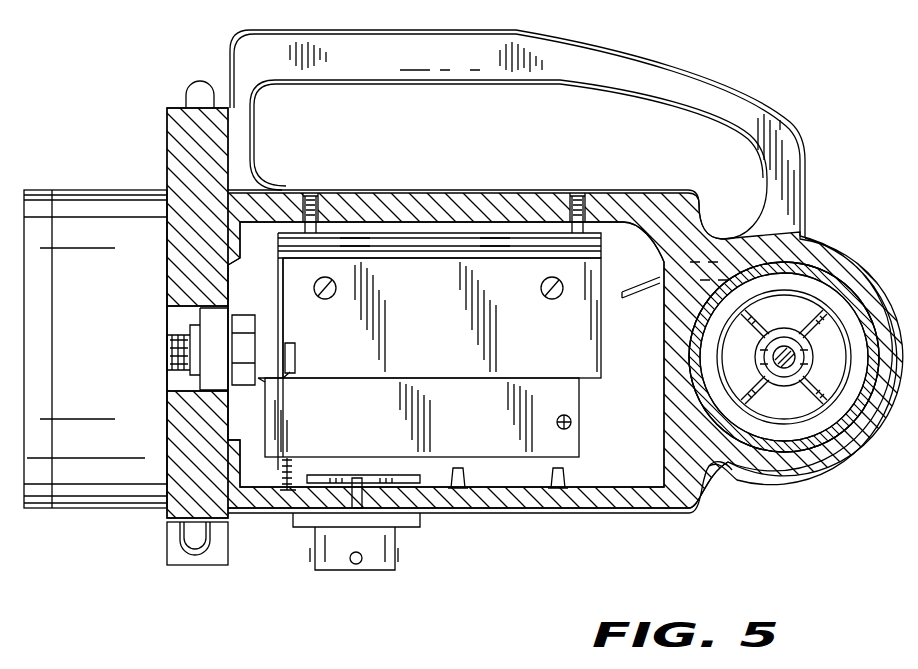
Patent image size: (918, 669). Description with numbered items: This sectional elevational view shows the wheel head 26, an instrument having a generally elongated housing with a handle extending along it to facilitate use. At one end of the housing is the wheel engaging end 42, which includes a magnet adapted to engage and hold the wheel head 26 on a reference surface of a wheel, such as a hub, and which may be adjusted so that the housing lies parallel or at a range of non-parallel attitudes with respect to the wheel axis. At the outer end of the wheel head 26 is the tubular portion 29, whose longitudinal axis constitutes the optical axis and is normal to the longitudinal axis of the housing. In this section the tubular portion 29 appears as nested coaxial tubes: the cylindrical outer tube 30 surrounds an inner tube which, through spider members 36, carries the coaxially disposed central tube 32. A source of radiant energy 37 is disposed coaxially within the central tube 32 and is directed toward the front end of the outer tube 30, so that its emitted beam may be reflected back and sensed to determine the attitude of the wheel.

The wheel head 26 is at (528, 530).
The tubular portion 29 is at (843, 488).
The cylindrical outer tube 30 is at (778, 442).
The central tube 32 is at (813, 352).
The spider members 36 is at (826, 304).
The source of radiant energy 37 is at (762, 357).
The wheel engaging end 42 is at (100, 506).